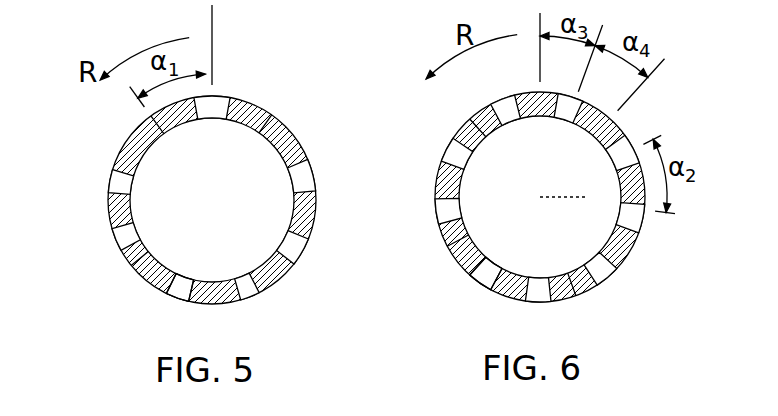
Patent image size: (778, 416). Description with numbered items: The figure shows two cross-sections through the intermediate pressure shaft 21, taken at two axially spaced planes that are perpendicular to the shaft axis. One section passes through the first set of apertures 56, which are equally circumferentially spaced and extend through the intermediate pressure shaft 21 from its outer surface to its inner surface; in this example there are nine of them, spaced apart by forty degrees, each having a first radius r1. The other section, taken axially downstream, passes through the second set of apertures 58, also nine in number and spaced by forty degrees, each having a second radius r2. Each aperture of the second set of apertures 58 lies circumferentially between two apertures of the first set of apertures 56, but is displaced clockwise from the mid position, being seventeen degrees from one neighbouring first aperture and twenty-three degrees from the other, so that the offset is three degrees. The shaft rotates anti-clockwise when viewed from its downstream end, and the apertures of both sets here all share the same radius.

In FIG. 5, the intermediate pressure shaft 21 is at (108, 220).
In FIG. 6, the intermediate pressure shaft 21 is at (438, 188).
In FIG. 5, the first set of apertures 56 is at (116, 182).
In FIG. 6, the second set of apertures 58 is at (458, 150).
In FIG. 5, the first radius r1 is at (183, 288).
In FIG. 6, the second radius r2 is at (478, 268).